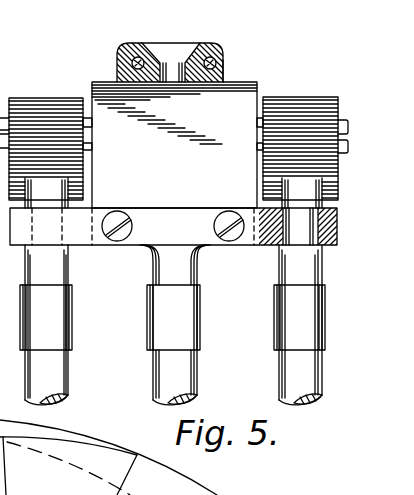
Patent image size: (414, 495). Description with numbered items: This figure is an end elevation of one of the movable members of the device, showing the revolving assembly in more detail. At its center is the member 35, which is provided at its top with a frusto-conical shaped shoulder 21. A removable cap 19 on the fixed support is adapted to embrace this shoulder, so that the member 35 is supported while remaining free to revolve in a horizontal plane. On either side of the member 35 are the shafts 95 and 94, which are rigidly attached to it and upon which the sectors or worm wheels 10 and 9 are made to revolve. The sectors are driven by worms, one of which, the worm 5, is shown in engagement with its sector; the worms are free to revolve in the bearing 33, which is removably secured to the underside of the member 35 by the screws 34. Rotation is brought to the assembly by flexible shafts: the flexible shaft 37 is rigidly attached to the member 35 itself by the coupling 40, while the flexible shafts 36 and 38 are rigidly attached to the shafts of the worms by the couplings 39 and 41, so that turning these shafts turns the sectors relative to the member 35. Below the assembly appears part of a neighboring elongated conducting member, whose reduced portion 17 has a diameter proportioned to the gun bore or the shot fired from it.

The frusto-conical shaped shoulder 21 is at (172, 54).
The removable cap 19 is at (223, 73).
The member 35 is at (174, 145).
The sector or worm wheel 10 is at (12, 100).
The shaft 95 is at (88, 118).
The shaft 94 is at (260, 118).
The sector or worm wheel 9 is at (338, 118).
The worm wheel 5 is at (322, 168).
The bearing 33 is at (80, 237).
The screws 34 is at (233, 250).
The flexible shaft 36 is at (63, 325).
The coupling 39 is at (72, 312).
The flexible shaft 37 is at (186, 325).
The coupling 40 is at (200, 312).
The flexible shaft 38 is at (316, 325).
The coupling 41 is at (325, 312).
The reduced portion 17 is at (0, 475).